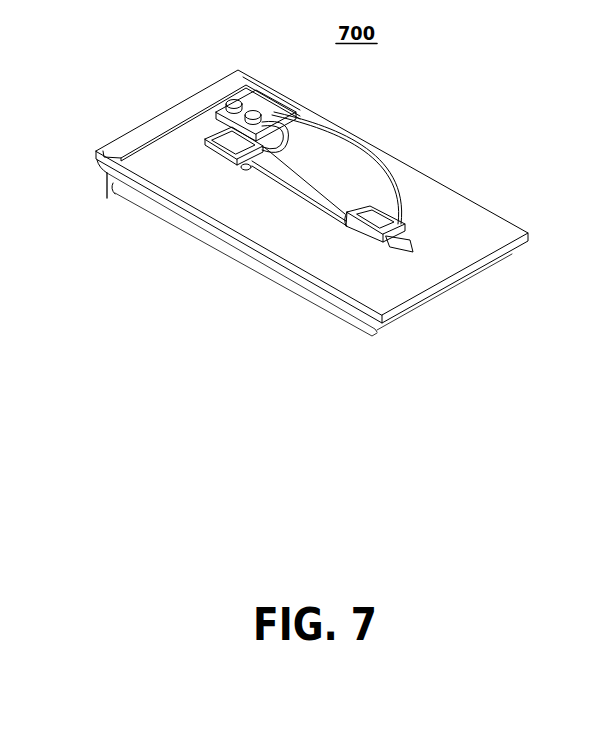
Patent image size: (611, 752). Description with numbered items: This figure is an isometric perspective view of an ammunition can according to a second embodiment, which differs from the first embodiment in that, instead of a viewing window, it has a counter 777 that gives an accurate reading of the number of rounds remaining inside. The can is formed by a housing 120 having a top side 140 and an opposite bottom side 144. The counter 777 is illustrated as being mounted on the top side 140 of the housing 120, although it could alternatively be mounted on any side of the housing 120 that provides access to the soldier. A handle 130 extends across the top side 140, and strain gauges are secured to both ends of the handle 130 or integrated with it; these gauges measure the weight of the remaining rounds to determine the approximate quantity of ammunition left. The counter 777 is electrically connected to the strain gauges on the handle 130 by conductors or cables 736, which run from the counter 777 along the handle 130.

The housing 120 is at (339, 295).
The top side 140 is at (339, 196).
The bottom side 144 is at (321, 346).
The handle 130 is at (253, 142).
The counter 777 is at (237, 87).
The cables 736 is at (337, 135).